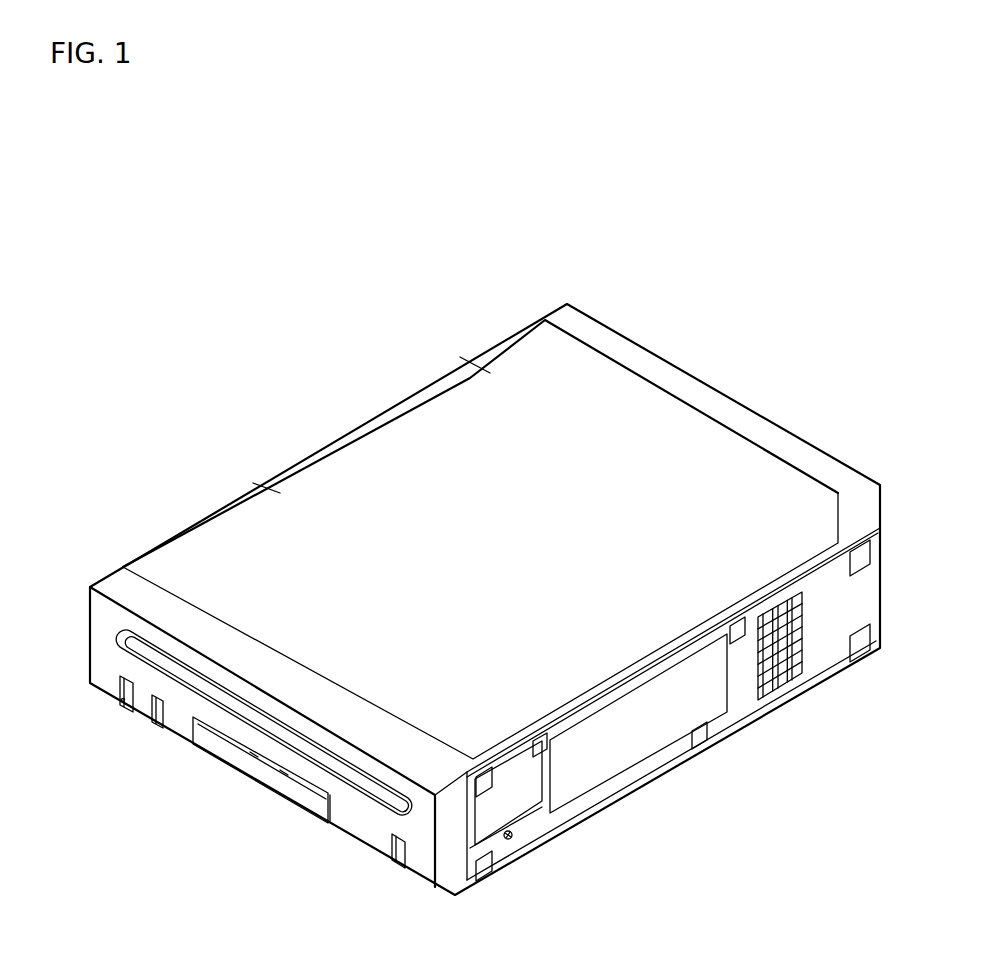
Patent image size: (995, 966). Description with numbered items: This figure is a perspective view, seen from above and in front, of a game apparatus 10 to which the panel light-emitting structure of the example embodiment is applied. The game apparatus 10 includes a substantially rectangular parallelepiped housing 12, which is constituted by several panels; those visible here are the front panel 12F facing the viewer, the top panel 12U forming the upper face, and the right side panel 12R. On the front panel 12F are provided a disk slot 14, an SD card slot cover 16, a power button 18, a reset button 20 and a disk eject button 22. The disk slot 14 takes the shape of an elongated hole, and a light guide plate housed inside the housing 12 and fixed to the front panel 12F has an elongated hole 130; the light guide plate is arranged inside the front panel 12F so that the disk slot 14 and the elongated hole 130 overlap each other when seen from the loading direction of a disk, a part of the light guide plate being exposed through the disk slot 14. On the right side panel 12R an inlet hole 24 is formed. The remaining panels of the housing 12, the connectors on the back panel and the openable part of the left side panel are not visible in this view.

The game apparatus 10 is at (317, 299).
The housing 12 is at (650, 326).
The top panel 12U is at (462, 490).
The front panel 12F is at (97, 664).
The right side panel 12R is at (633, 740).
The disk slot 14 is at (244, 716).
The SD card slot cover 16 is at (281, 789).
The power button 18 is at (122, 698).
The reset button 20 is at (160, 722).
The disk eject button 22 is at (396, 848).
The inlet hole 24 is at (806, 672).
The elongated hole 130 is at (318, 783).